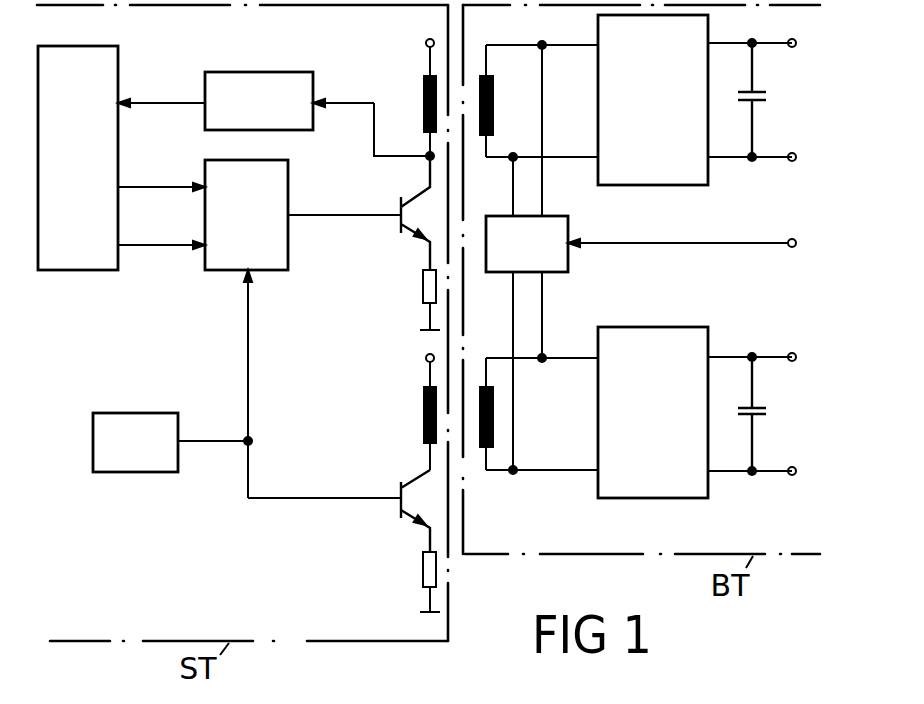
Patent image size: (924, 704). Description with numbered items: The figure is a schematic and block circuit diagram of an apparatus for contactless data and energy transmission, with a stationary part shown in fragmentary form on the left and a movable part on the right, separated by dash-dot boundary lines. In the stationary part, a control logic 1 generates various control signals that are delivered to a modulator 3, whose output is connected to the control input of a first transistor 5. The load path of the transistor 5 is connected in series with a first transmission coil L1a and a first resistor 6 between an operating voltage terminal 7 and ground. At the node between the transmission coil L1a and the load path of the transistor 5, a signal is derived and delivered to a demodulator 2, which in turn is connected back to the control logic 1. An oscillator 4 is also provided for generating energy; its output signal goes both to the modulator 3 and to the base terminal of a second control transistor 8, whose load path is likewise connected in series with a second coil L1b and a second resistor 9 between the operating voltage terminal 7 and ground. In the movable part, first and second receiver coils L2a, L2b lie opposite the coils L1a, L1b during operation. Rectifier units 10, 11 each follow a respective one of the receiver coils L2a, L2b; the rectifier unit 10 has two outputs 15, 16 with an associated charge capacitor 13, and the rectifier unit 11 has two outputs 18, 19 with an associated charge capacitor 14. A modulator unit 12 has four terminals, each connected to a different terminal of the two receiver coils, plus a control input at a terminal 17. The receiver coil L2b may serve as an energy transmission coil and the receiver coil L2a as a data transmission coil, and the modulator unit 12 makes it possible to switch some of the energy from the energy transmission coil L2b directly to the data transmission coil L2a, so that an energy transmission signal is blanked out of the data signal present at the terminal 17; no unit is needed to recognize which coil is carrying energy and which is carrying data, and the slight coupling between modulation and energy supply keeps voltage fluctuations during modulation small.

The control logic 1 is at (78, 158).
The demodulator 2 is at (259, 101).
The modulator 3 is at (246, 215).
The oscillator 4 is at (135, 442).
The first transistor 5 is at (397, 204).
The first resistor 6 is at (416, 300).
The operating voltage terminal 7 is at (416, 203).
The second control transistor 8 is at (396, 487).
The second resistor 9 is at (417, 582).
The rectifier unit 10 is at (653, 100).
The rectifier unit 11 is at (653, 412).
The modulator unit 12 is at (527, 244).
The charge capacitor 13 is at (765, 100).
The charge capacitor 14 is at (765, 414).
The output 15 is at (806, 44).
The output 16 is at (806, 157).
The terminal 17 is at (696, 243).
The output 18 is at (808, 357).
The output 19 is at (808, 471).
The first transmission coil L1a is at (409, 113).
The second coil L1b is at (407, 428).
The first receiver coil L2a is at (508, 101).
The second receiver coil L2b is at (495, 402).